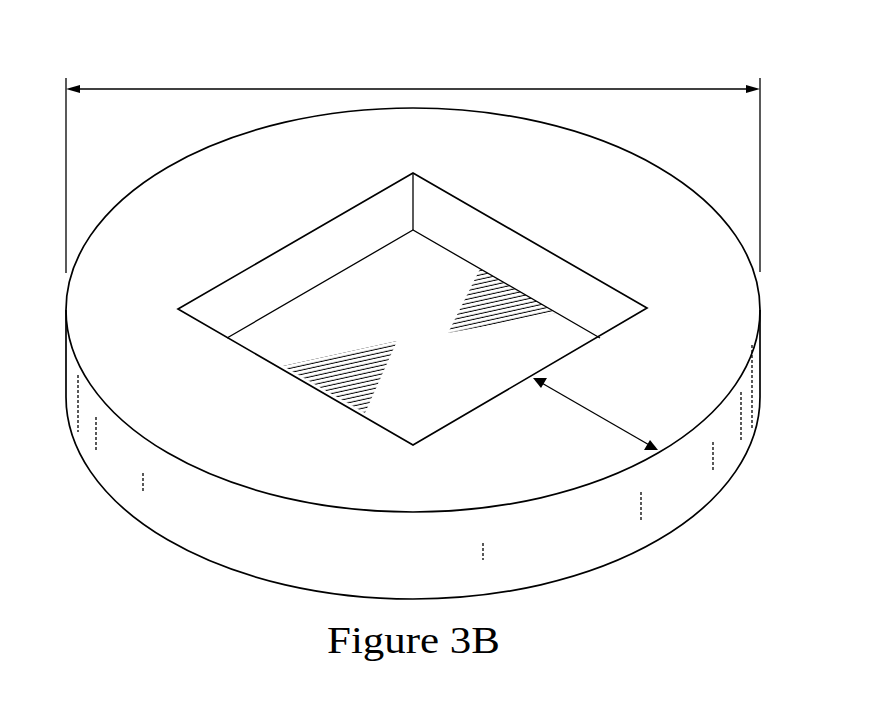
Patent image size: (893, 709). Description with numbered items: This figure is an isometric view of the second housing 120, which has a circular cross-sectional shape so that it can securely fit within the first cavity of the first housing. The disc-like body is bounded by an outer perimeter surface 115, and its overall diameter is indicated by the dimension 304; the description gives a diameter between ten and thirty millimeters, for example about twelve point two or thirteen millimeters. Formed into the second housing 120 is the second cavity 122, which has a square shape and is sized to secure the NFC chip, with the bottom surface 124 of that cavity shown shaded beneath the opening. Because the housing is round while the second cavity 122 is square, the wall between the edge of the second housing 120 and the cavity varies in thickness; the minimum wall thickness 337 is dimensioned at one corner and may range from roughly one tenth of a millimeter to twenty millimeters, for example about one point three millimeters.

The second housing 120 is at (410, 300).
The outer perimeter surface 115 is at (212, 543).
The second cavity 122 is at (412, 302).
The bottom surface 124 is at (463, 275).
The pedestal diameter 304 is at (412, 89).
The minimum wall thickness 337 is at (595, 412).